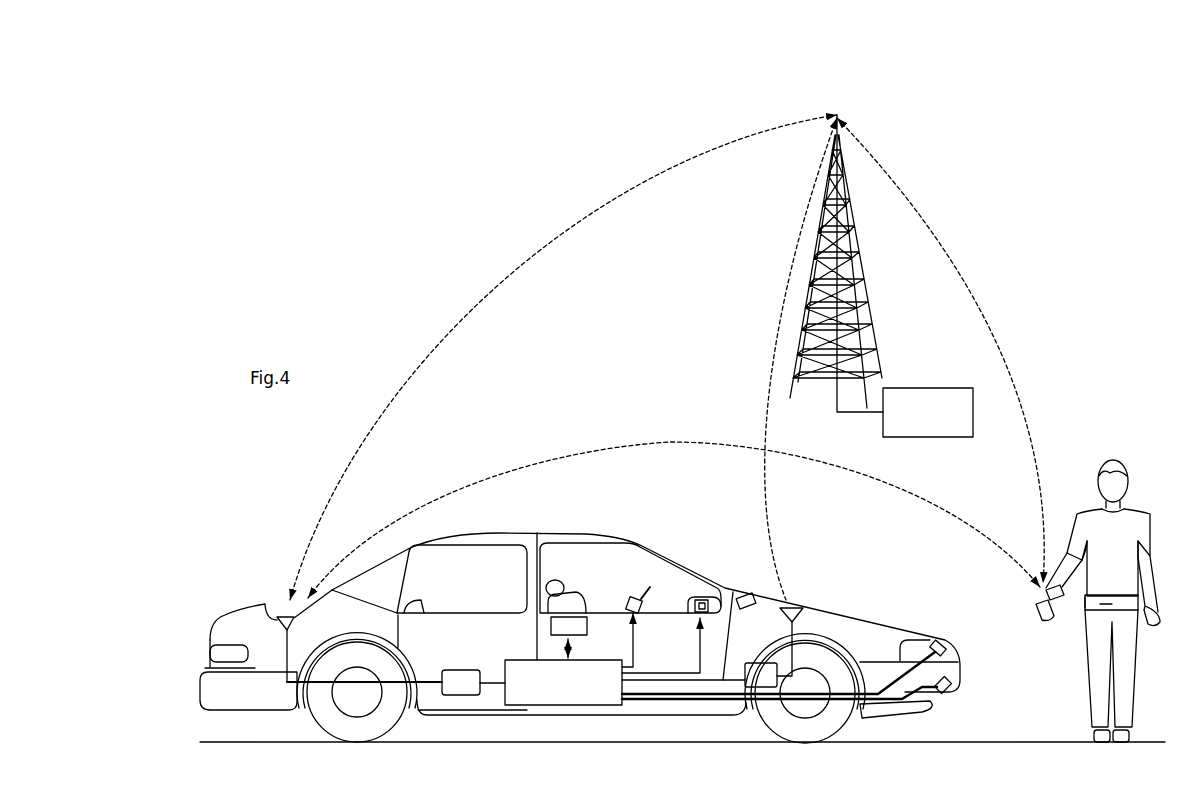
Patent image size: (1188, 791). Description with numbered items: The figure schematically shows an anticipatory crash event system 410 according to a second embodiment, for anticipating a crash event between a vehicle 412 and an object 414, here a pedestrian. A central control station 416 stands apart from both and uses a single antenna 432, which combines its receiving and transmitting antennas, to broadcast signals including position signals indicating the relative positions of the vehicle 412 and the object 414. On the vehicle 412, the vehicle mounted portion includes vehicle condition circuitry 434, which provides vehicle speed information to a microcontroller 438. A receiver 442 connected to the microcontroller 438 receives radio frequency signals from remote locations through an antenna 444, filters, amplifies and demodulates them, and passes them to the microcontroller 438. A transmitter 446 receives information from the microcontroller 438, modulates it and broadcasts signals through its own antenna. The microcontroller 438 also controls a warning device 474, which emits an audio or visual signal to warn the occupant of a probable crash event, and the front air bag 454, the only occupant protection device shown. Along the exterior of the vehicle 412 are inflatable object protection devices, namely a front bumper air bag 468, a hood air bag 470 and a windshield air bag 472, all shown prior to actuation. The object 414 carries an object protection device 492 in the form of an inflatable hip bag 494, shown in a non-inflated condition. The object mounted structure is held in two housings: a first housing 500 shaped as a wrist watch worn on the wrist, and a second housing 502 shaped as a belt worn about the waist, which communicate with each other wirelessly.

The anticipatory crash event system 410 is at (451, 261).
The vehicle 412 is at (229, 608).
The object 414 is at (1152, 504).
The central control station 416 is at (937, 387).
The antenna 432 is at (852, 178).
The vehicle condition circuitry 434 is at (595, 617).
The microcontroller 438 is at (518, 706).
The receiver 442 is at (462, 697).
The antenna 444 is at (277, 616).
The transmitter 446 is at (745, 663).
The front air bag 454 is at (641, 596).
The front bumper air bag 468 is at (950, 691).
The hood air bag 470 is at (948, 650).
The windshield air bag 472 is at (748, 596).
The warning device 474 is at (700, 598).
The object protection device 492 is at (1078, 606).
The inflatable hip bag 494 is at (1100, 604).
The first housing 500 is at (1040, 593).
The second housing 502 is at (1125, 612).